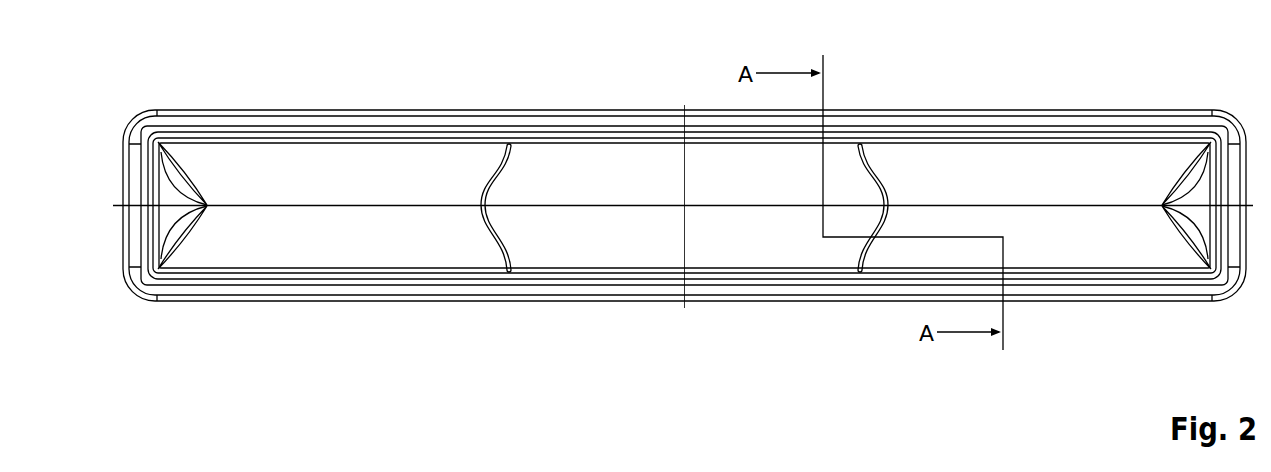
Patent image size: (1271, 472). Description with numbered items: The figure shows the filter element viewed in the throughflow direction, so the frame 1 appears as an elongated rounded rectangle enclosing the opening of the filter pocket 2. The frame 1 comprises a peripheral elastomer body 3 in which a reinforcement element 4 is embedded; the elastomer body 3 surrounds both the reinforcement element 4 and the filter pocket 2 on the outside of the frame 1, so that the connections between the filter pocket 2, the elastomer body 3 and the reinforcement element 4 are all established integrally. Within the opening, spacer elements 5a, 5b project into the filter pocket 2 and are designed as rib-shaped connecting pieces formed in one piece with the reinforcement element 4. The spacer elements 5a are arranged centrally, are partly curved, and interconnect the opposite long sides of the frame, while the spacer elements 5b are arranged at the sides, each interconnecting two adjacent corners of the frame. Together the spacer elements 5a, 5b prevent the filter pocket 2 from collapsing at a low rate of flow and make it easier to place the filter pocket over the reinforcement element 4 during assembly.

The frame 1 is at (412, 103).
The filter pocket 2 is at (303, 248).
The elastomer body 3 is at (570, 126).
The reinforcement element 4 is at (440, 270).
The spacer elements 5a is at (873, 167).
The spacer elements 5b is at (206, 238).